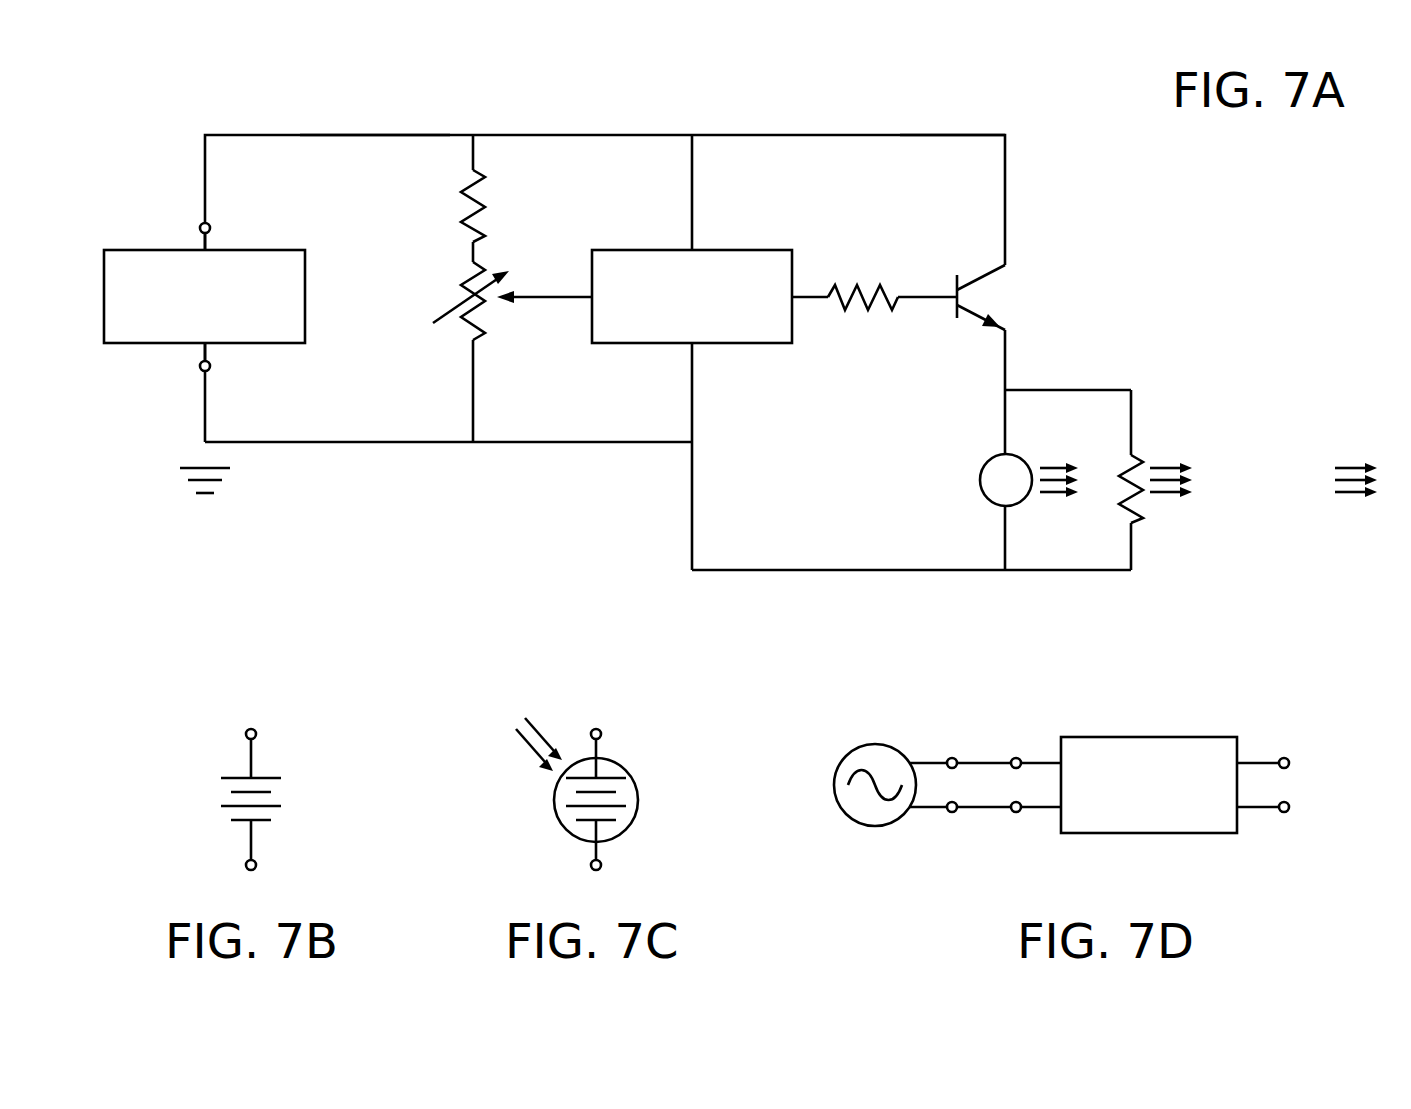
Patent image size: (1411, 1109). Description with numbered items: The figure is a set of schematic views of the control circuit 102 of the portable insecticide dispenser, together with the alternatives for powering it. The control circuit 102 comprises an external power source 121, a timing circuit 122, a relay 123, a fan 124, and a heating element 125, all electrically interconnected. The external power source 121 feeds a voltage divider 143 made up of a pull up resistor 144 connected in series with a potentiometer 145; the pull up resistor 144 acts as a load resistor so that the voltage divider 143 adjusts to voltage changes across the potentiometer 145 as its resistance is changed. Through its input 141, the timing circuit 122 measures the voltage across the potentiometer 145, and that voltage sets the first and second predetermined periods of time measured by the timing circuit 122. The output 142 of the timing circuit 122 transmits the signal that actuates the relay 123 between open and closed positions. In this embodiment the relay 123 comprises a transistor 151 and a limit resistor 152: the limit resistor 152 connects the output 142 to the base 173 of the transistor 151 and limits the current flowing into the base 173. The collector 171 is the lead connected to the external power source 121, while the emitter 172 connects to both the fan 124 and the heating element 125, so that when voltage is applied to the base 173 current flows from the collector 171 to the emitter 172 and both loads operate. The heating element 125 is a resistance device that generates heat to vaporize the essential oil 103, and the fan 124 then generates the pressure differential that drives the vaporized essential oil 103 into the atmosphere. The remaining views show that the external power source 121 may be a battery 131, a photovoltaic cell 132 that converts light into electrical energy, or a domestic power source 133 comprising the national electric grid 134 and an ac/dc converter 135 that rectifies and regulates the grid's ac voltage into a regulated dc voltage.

In FIG. 7A, the control circuit 102 is at (212, 110).
In FIG. 7A, the essential oil 103 is at (1272, 460).
In FIG. 7A, the external power source 121 is at (143, 250).
In FIG. 7A, the timing circuit 122 is at (748, 256).
In FIG. 7A, the relay 123 is at (1040, 139).
In FIG. 7A, the fan 124 is at (980, 480).
In FIG. 7A, the heating element 125 is at (1137, 453).
In FIG. 7A, the input 141 is at (548, 302).
In FIG. 7A, the output 142 is at (812, 296).
In FIG. 7A, the voltage divider 143 is at (507, 213).
In FIG. 7A, the pull up resistor 144 is at (457, 204).
In FIG. 7A, the potentiometer 145 is at (455, 303).
In FIG. 7A, the transistor 151 is at (1104, 283).
In FIG. 7A, the limit resistor 152 is at (861, 314).
In FIG. 7A, the collector 171 is at (1010, 268).
In FIG. 7A, the emitter 172 is at (1012, 333).
In FIG. 7A, the base 173 is at (930, 296).
In FIG. 7B, the battery 131 is at (232, 742).
In FIG. 7C, the photovoltaic cell 132 is at (571, 732).
In FIG. 7D, the domestic power source 133 is at (1297, 748).
In FIG. 7D, the national electric grid 134 is at (890, 748).
In FIG. 7D, the ac/dc converter 135 is at (1190, 757).